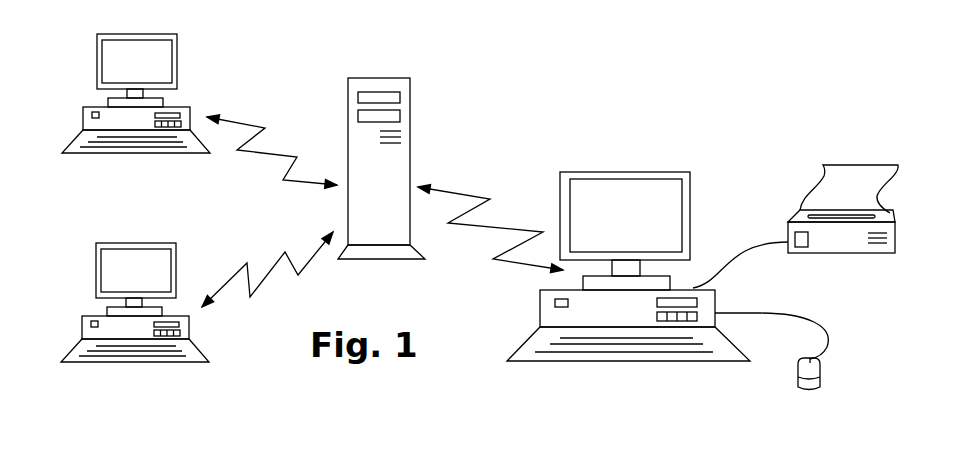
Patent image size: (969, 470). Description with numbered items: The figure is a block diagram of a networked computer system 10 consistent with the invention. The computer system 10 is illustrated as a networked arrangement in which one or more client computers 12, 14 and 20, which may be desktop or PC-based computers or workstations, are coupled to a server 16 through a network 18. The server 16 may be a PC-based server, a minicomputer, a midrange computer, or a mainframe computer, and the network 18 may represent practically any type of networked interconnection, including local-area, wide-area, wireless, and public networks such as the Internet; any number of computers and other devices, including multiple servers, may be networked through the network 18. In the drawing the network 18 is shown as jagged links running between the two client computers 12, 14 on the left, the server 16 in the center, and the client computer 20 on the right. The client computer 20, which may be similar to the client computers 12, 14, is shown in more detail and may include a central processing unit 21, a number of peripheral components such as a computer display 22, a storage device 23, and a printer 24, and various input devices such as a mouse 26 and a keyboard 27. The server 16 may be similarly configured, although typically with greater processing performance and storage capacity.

The computer system 10 is at (547, 85).
The client computer 12 is at (97, 50).
The client computer 14 is at (95, 247).
The server 16 is at (367, 78).
The network 18 is at (278, 157).
The client computer 20 is at (680, 172).
The central processing unit 21 is at (550, 315).
The computer display 22 is at (597, 177).
The storage device 23 is at (673, 322).
The printer 24 is at (800, 218).
The mouse 26 is at (817, 377).
The keyboard 27 is at (527, 360).